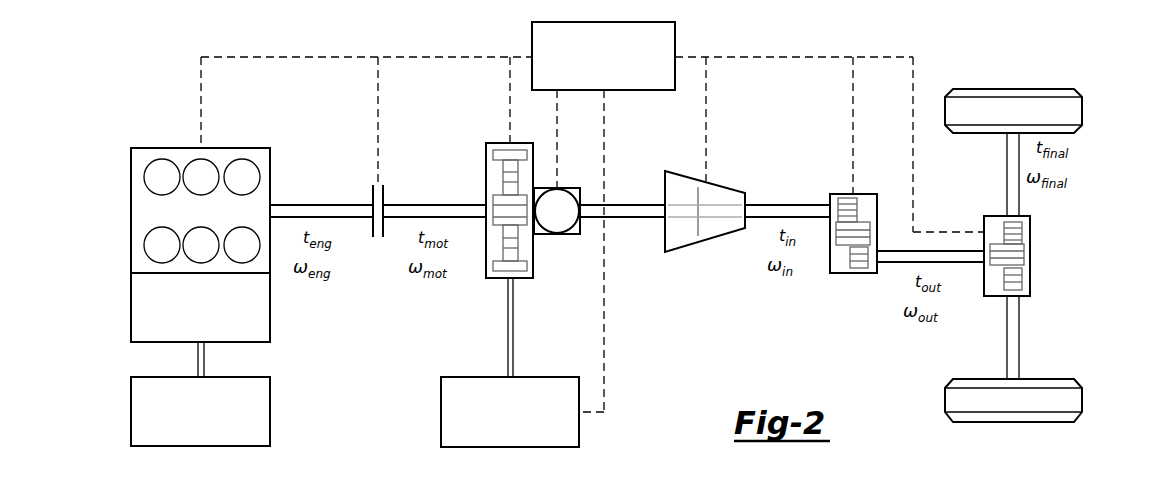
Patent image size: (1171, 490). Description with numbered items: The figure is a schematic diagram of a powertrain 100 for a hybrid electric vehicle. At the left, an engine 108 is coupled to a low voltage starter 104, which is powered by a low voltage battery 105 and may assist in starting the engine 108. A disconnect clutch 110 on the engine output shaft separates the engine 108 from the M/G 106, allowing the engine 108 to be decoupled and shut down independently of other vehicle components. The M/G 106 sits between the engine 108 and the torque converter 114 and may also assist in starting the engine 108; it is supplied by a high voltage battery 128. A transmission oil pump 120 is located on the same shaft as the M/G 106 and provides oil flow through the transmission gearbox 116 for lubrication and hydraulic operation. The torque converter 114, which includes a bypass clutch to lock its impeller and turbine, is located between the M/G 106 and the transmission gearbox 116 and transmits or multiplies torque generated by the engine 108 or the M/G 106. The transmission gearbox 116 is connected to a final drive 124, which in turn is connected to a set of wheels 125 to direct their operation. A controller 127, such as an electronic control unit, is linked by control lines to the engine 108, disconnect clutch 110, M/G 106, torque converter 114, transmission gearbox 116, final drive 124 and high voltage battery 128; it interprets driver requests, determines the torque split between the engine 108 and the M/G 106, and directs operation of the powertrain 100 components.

The powertrain 100 is at (998, 56).
The low voltage starter 104 is at (131, 309).
The low voltage battery 105 is at (131, 413).
The M/G 106 is at (487, 171).
The engine 108 is at (131, 211).
The disconnect clutch 110 is at (372, 197).
The torque converter 114 is at (665, 188).
The transmission gearbox 116 is at (830, 198).
The transmission oil pump 120 is at (569, 235).
The final drive 124 is at (1030, 283).
The wheels 125 is at (1082, 111).
The controller 127 is at (532, 34).
The high voltage battery 128 is at (441, 413).